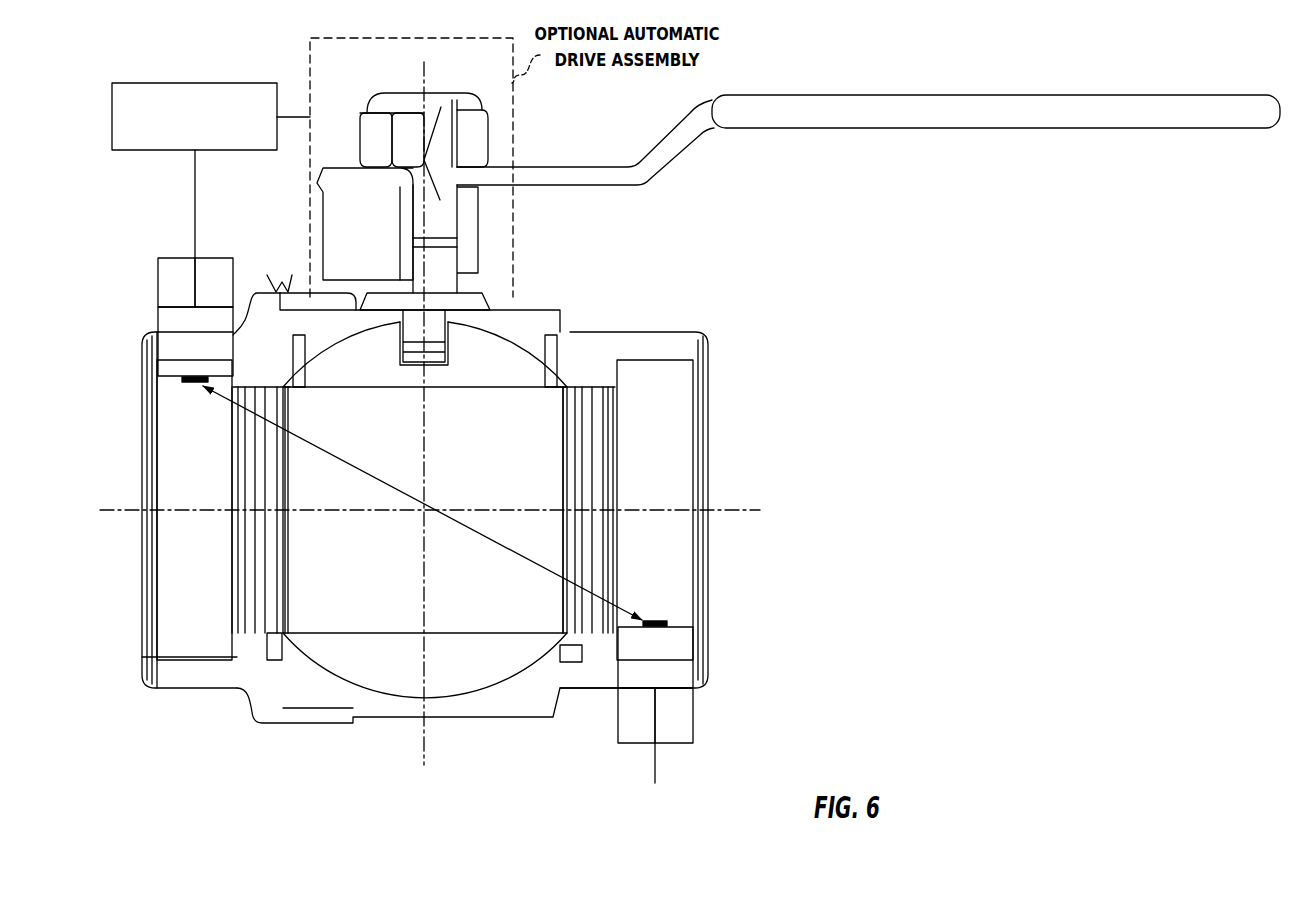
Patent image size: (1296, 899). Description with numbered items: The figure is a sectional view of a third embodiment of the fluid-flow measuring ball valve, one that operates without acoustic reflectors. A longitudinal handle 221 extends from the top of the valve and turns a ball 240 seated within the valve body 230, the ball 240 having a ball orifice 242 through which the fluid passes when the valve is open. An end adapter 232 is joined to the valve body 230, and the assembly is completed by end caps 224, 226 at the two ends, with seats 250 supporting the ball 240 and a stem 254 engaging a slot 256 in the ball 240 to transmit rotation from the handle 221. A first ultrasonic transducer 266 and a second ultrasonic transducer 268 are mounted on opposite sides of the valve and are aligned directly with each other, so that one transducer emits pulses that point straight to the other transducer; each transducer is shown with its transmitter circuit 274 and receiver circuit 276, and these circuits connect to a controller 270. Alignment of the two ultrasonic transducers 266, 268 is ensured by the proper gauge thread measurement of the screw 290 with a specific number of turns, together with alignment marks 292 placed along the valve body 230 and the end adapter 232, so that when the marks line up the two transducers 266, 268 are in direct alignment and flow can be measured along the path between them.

The handle 221 is at (920, 96).
The first end cap 224 is at (142, 448).
The second end cap 226 is at (708, 428).
The valve body 230 is at (680, 341).
The end adapter 232 is at (192, 690).
The ball 240 is at (465, 686).
The ball orifice 242 is at (492, 475).
The seats 250 is at (278, 660).
The stem 254 is at (442, 272).
The stem slot 256 is at (500, 331).
The first ultrasonic transducer 266 is at (112, 307).
The second ultrasonic transducer 268 is at (686, 680).
The controller 270 is at (206, 83).
The transmitter circuit 274 is at (158, 275).
The receiver circuit 276 is at (205, 258).
The screw 290 is at (235, 640).
The alignment marks 292 is at (281, 275).